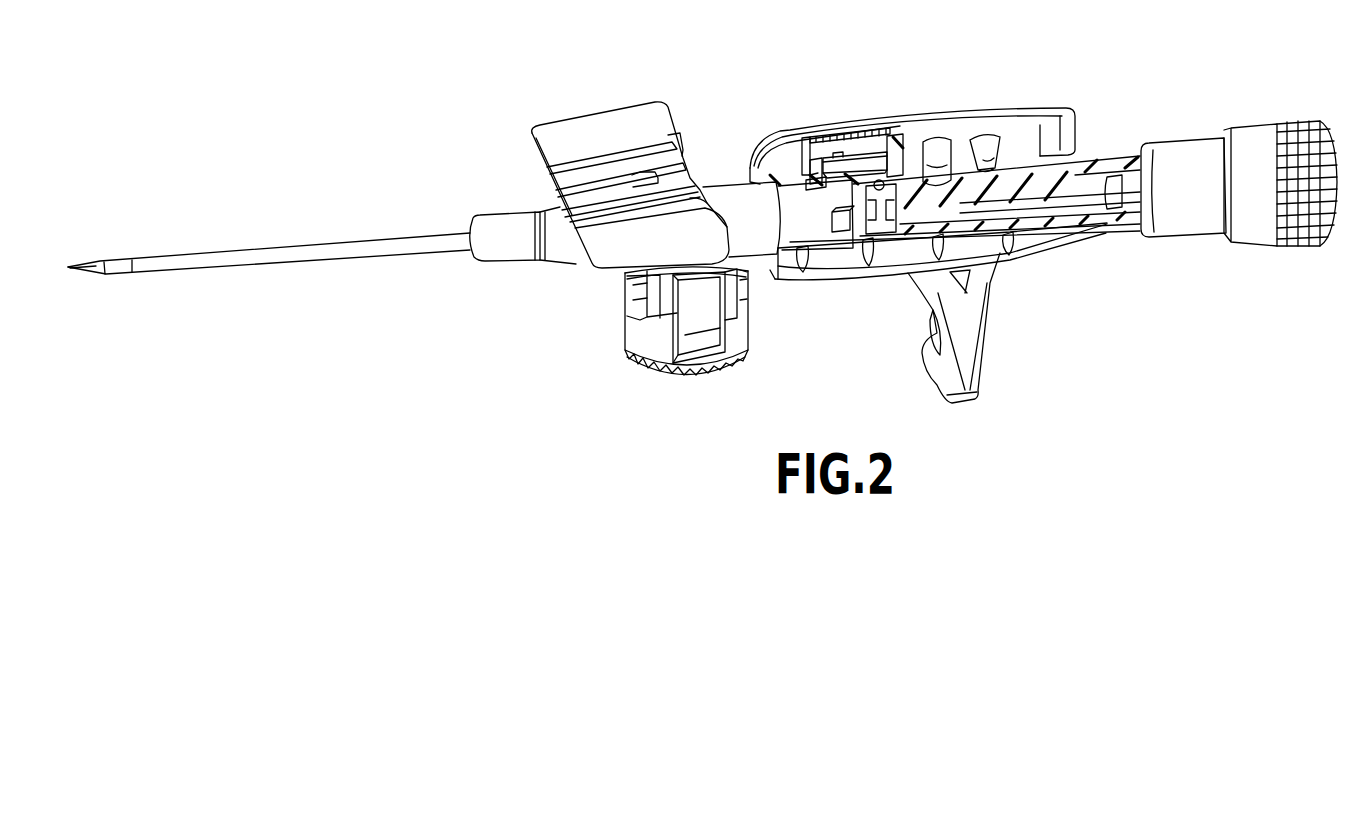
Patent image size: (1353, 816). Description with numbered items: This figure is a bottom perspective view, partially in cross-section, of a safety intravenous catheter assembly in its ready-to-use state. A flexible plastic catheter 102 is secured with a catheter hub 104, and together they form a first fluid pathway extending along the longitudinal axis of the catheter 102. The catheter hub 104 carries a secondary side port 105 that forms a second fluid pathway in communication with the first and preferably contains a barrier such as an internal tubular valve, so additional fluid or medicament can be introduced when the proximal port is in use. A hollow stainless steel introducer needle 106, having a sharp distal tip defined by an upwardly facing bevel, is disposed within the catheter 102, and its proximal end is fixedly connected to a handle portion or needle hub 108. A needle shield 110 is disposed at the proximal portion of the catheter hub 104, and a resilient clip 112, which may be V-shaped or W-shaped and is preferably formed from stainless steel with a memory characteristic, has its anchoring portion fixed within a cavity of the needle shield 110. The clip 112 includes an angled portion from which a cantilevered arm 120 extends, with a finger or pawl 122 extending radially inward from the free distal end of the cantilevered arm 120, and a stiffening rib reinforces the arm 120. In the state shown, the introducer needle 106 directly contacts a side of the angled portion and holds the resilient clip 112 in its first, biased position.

The catheter 102 is at (350, 240).
The catheter hub 104 is at (723, 183).
The secondary side port 105 is at (633, 363).
The introducer needle 106 is at (83, 272).
The needle hub 108 is at (983, 320).
The needle shield 110 is at (790, 155).
The resilient clip 112 is at (887, 217).
The cantilevered arm 120 is at (850, 168).
The pawl 122 is at (820, 183).